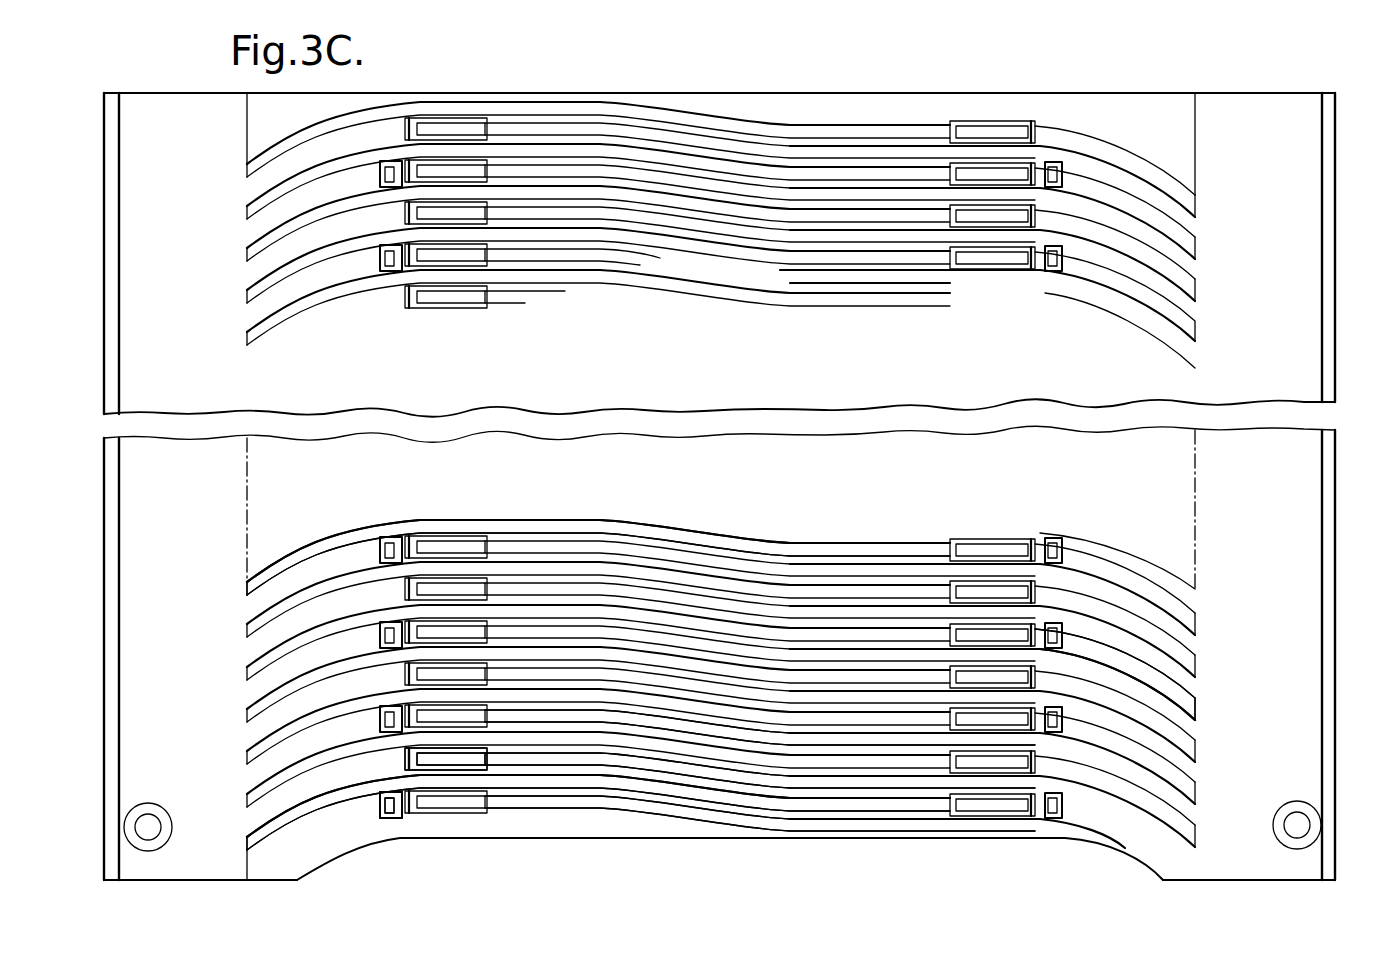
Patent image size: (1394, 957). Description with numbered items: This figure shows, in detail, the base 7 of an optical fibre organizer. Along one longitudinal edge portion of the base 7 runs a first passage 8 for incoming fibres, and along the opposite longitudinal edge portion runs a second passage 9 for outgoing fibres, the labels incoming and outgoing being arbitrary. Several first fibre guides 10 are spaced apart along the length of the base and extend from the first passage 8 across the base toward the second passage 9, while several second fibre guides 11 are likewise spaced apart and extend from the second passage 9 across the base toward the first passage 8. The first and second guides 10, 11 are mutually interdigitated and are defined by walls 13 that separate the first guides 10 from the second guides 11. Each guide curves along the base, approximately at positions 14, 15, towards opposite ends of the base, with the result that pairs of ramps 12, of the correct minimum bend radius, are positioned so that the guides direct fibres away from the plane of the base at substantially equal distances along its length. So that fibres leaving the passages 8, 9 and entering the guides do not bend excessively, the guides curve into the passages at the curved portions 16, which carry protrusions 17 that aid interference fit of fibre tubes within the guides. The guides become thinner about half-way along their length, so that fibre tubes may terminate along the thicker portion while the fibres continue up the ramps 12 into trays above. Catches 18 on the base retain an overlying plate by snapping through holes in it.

The base 7 is at (1298, 741).
The first passage 8 is at (196, 671).
The second passage 9 is at (1274, 668).
The first fibre guides 10 is at (256, 718).
The second fibre guides 11 is at (1192, 733).
The ramps 12 is at (467, 767).
The walls 13 is at (582, 766).
The curve position 14 is at (650, 778).
The curve position 15 is at (747, 774).
The curved portions 16 is at (322, 797).
The protrusions 17 is at (347, 793).
The catches 18 is at (300, 767).